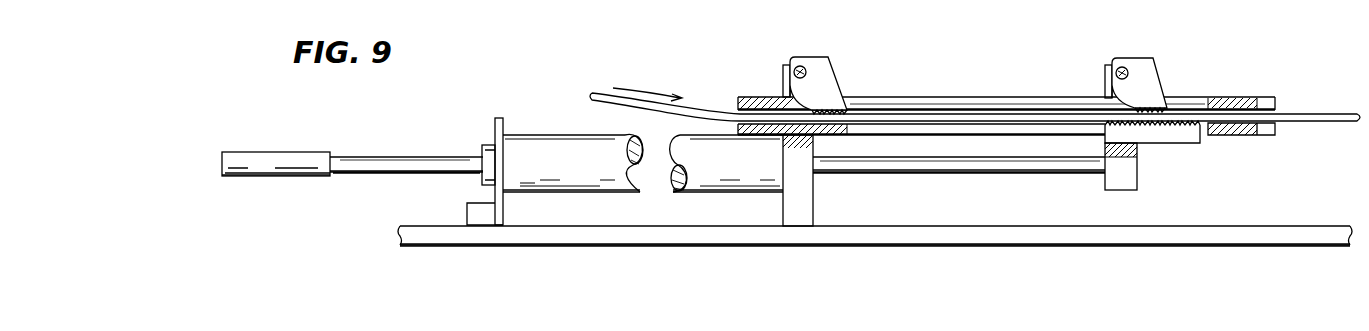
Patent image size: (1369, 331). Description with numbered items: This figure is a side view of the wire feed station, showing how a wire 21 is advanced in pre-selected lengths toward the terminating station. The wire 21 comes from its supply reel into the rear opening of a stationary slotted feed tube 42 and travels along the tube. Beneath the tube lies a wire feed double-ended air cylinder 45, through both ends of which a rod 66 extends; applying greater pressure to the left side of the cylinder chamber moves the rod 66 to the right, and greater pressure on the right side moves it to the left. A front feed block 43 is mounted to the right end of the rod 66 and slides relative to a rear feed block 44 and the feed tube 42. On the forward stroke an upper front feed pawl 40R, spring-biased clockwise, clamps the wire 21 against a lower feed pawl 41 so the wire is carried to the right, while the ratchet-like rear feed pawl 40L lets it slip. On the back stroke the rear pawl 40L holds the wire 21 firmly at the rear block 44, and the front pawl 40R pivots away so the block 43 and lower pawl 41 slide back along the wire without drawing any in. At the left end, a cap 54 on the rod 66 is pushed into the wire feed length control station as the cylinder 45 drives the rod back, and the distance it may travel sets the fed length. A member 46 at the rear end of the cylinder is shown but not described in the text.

The wire 21 is at (706, 110).
The rear feed pawl 40L is at (835, 80).
The upper front feed pawl 40R is at (1153, 80).
The lower feed pawl 41 is at (1190, 144).
The feed tube 42 is at (975, 97).
The front feed block 43 is at (1137, 180).
The rear feed block 44 is at (813, 190).
The wire feed double-ended air cylinder 45 is at (550, 150).
The end plate 46 is at (495, 122).
The cap 54 is at (268, 158).
The rod 66 is at (370, 162).